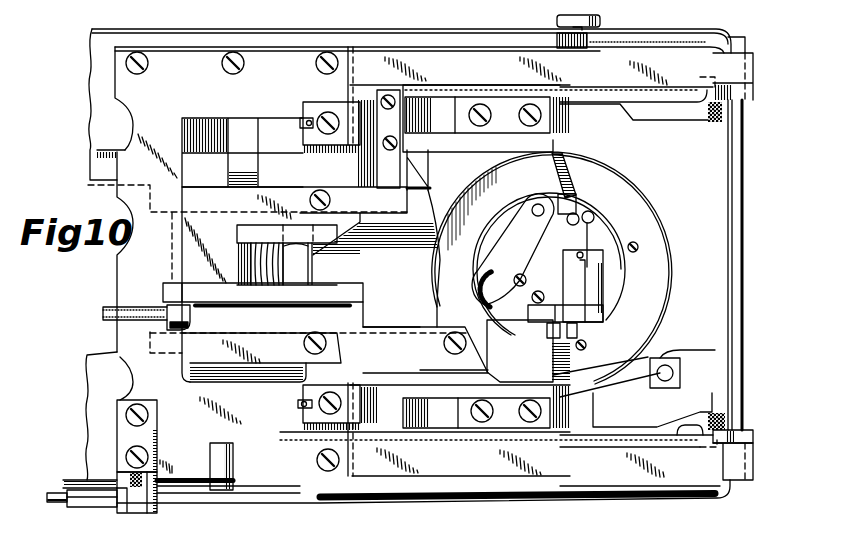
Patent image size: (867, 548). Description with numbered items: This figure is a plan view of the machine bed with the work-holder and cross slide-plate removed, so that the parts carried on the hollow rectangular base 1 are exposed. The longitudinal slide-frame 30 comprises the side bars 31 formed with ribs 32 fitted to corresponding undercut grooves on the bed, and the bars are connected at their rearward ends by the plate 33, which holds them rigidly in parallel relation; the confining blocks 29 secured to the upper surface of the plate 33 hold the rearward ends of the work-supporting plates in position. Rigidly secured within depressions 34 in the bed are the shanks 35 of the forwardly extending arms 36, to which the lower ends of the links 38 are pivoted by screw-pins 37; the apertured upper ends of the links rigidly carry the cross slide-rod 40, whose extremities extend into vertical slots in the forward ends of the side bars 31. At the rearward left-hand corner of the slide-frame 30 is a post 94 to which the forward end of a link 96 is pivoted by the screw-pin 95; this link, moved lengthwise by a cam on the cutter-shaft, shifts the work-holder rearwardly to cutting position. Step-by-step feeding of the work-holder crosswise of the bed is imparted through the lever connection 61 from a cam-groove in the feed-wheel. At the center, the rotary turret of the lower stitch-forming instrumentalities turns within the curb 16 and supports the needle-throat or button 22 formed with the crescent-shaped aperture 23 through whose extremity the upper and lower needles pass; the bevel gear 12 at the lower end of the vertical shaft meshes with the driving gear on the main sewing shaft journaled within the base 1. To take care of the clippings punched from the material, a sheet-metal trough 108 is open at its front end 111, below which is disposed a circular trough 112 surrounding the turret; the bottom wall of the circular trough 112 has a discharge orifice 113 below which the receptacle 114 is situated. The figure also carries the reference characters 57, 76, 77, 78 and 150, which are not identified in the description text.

The base 1 is at (393, 33).
The bevel gear 12 is at (297, 404).
The curb 16 is at (383, 214).
The needle-throat 22 is at (585, 247).
The crescent-shaped aperture 23 is at (520, 298).
The confining blocks 29 is at (300, 430).
The longitudinal slide-frame 30 is at (117, 284).
The side bars 31 is at (396, 262).
The ribs 32 is at (637, 90).
The plate 33 is at (282, 470).
The depressions 34 is at (525, 256).
The shanks 35 is at (498, 262).
The forwardly extending arms 36 is at (657, 121).
The screw-pins 37 is at (710, 77).
The links 38 is at (754, 92).
The cross slide-rod 40 is at (745, 280).
The dowel 57 is at (705, 449).
The lever connection 61 is at (611, 372).
The spring 76 is at (318, 258).
The lever 77 is at (364, 292).
The pin 78 is at (398, 333).
The post 94 is at (157, 473).
The screw-pin 95 is at (137, 510).
The link 96 is at (103, 505).
The sheet-metal trough 108 is at (376, 258).
The front end 111 is at (438, 256).
The circular trough 112 is at (552, 268).
The discharge orifice 113 is at (543, 359).
The receptacle 114 is at (702, 350).
The slide 150 is at (613, 273).